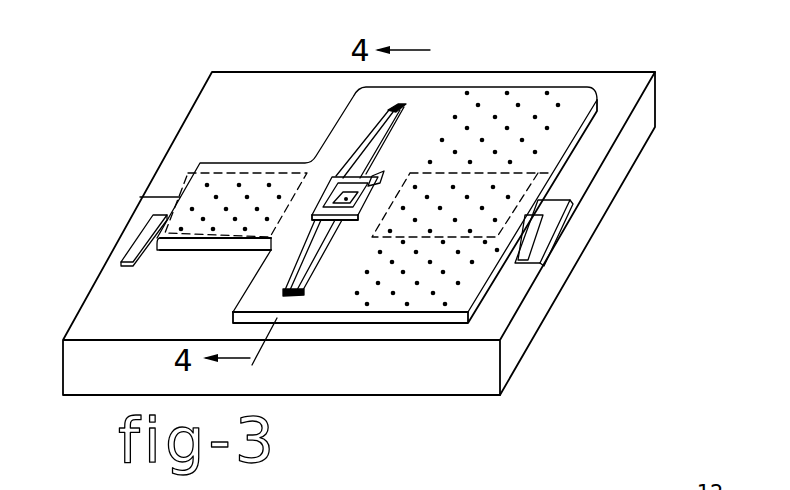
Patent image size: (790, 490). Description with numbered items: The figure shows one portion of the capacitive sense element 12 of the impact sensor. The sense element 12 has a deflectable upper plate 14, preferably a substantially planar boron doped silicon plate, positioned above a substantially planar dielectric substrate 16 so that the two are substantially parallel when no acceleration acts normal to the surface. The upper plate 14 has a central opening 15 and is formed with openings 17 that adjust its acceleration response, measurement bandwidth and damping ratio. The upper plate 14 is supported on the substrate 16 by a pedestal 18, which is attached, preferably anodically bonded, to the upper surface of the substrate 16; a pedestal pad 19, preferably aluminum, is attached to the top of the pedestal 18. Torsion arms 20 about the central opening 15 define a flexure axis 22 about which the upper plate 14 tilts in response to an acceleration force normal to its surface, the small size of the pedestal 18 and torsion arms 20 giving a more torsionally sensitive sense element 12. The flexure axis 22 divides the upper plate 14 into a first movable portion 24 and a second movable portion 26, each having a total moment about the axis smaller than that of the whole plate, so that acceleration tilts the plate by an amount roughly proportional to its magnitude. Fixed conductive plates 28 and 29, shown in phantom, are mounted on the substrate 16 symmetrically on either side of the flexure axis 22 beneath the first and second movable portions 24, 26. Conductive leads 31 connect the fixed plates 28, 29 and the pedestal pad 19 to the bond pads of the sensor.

The capacitive sense element 12 is at (637, 43).
The deflectable upper plate 14 is at (353, 97).
The central opening 15 is at (347, 209).
The substrate 16 is at (523, 329).
The openings 17 is at (424, 305).
The pedestal 18 is at (335, 175).
The pedestal pad 19 is at (373, 176).
The torsion arms 20 is at (403, 99).
The flexure axis 22 is at (433, 55).
The first movable portion 24 is at (200, 163).
The second movable portion 26 is at (567, 89).
The fixed conductive plate 28 is at (232, 170).
The fixed conductive plate 29 is at (577, 157).
The conductive leads 31 is at (128, 224).